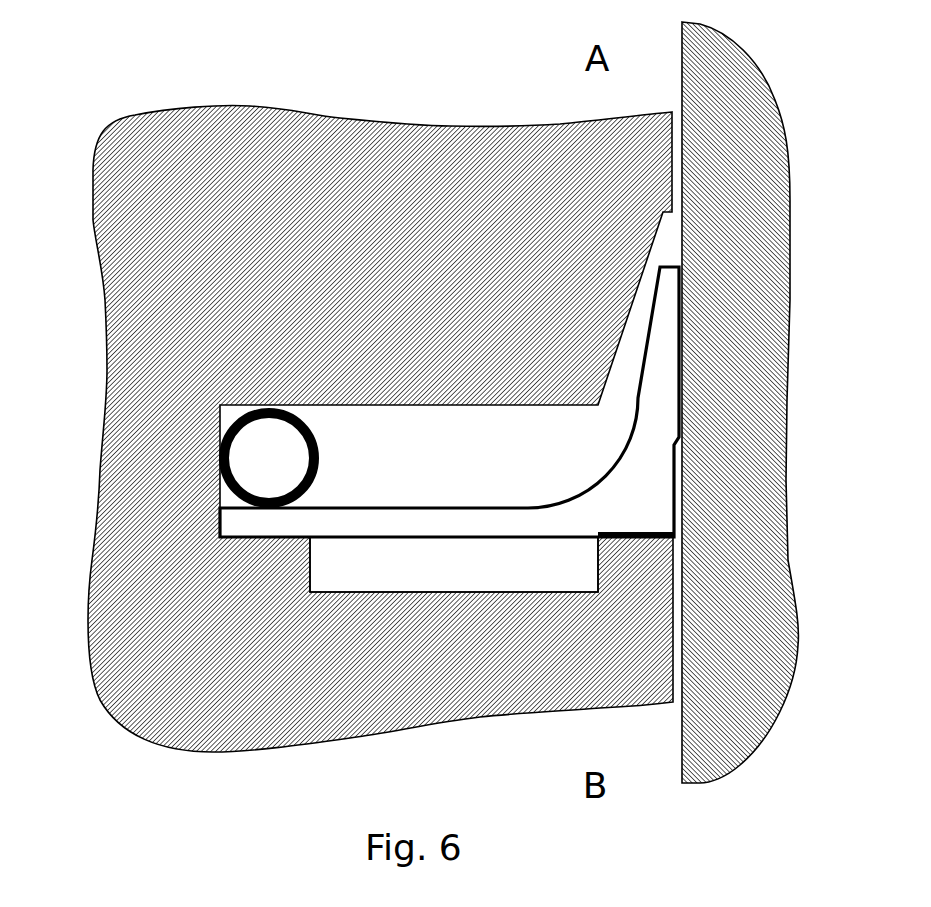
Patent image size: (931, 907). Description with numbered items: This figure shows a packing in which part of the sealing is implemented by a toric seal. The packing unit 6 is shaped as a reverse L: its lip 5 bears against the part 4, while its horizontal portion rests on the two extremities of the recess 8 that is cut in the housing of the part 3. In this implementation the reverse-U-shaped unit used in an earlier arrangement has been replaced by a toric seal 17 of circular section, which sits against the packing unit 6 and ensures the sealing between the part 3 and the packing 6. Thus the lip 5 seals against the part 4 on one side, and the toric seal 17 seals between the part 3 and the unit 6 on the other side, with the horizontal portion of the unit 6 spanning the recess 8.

The part 3 is at (388, 123).
The part 4 is at (788, 305).
The lip 5 is at (663, 350).
The unit 6 is at (677, 493).
The recess 8 is at (432, 565).
The toric seal 17 is at (220, 408).